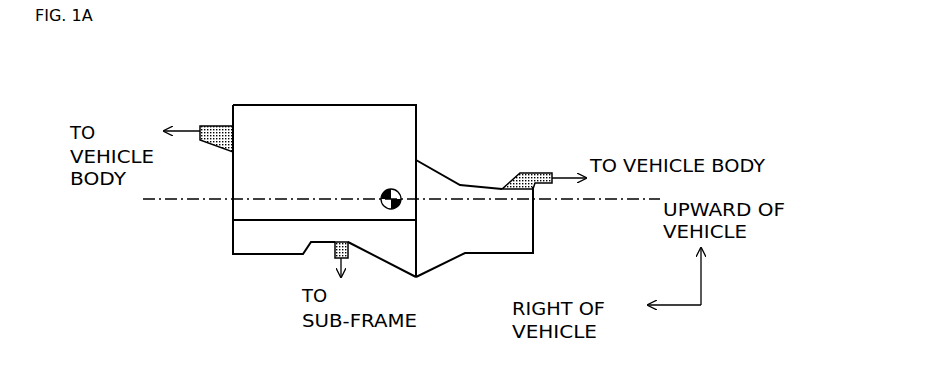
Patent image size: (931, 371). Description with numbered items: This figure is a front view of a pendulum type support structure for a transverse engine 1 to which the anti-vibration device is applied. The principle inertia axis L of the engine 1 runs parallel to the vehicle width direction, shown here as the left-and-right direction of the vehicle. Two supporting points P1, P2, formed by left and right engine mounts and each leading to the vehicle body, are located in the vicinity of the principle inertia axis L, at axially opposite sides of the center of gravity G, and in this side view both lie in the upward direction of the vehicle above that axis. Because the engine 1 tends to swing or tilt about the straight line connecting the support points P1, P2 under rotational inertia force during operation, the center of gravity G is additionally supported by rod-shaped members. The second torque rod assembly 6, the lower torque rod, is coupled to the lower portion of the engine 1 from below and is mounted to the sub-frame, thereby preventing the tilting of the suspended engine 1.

The transverse engine 1 is at (316, 132).
The second torque rod assembly 6 is at (333, 250).
The support point P1 is at (221, 126).
The support point P2 is at (534, 173).
The center of gravity G is at (386, 190).
The principle inertia axis L is at (591, 201).